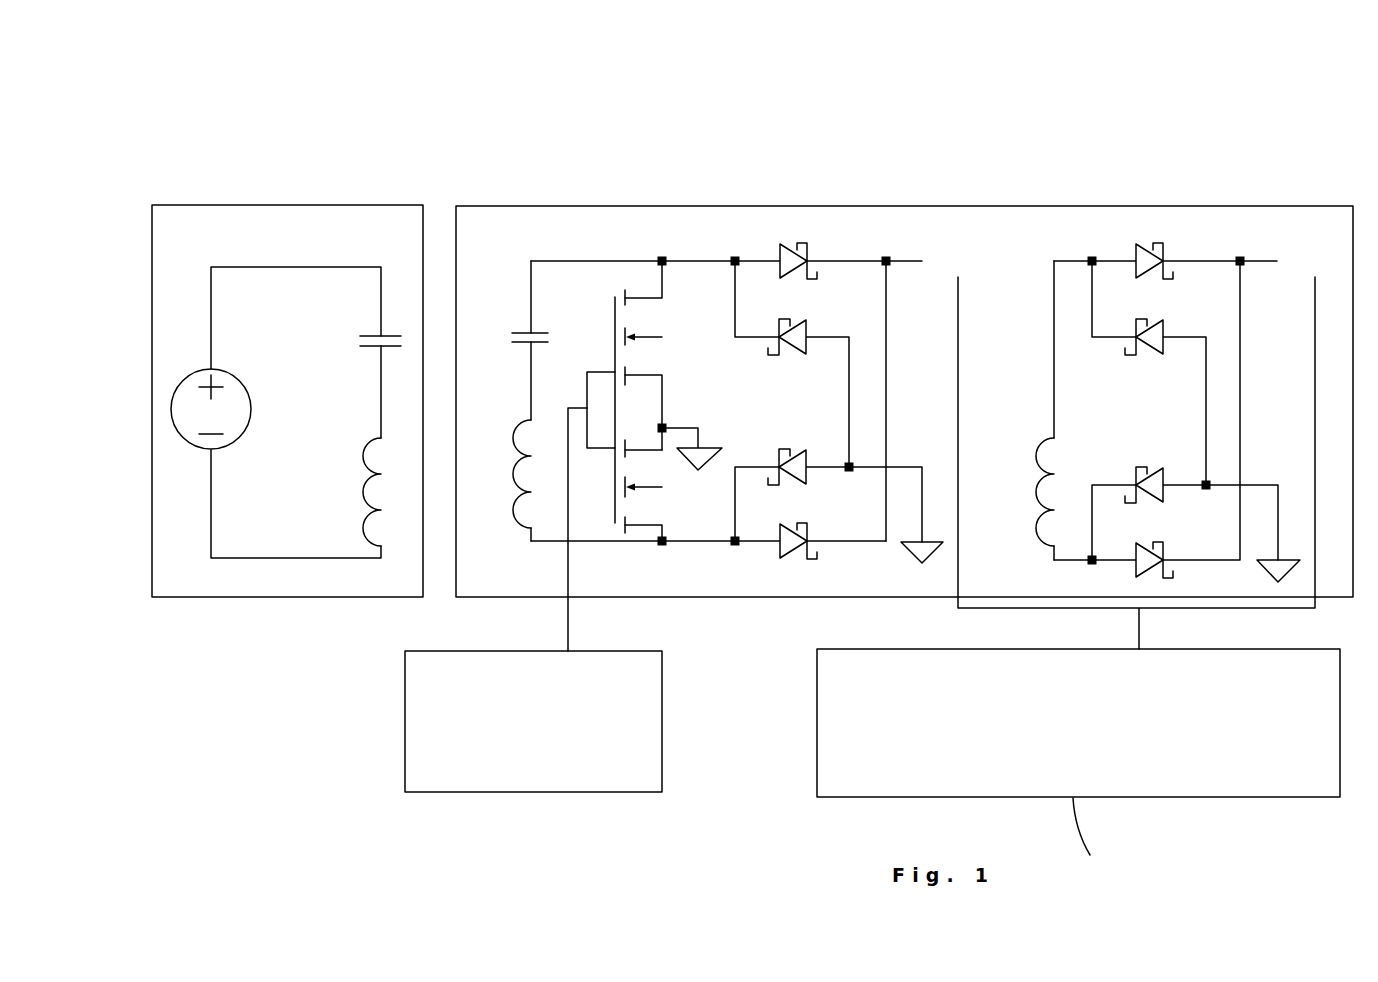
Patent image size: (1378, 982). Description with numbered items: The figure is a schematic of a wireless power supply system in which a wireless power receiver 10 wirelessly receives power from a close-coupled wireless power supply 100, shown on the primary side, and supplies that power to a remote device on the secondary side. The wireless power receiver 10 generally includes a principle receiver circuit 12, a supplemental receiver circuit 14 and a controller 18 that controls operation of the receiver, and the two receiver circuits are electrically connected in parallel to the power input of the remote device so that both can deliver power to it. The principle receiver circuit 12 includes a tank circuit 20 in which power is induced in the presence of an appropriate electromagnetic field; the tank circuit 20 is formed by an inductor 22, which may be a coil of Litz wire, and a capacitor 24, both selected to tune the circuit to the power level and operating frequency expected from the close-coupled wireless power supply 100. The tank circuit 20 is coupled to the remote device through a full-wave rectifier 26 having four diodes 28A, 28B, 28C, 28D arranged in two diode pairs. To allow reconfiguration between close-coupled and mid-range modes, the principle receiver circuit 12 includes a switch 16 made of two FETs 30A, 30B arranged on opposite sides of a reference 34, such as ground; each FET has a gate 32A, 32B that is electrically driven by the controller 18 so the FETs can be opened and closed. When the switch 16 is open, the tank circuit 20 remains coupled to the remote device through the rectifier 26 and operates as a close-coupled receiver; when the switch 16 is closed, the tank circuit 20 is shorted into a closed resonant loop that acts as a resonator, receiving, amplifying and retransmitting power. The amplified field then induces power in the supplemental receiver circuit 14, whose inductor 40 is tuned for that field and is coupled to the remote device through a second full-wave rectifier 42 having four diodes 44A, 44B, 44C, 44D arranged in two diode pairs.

The wireless power receiver 10 is at (934, 85).
The principle receiver circuit 12 is at (593, 224).
The supplemental receiver circuit 14 is at (1198, 228).
The switch 16 is at (576, 321).
The controller 18 is at (553, 795).
The tank circuit 20 is at (488, 557).
The inductor 22 is at (515, 433).
The capacitor 24 is at (508, 337).
The full-wave rectifier 26 is at (831, 228).
The diode 28A is at (782, 254).
The diode 28B is at (800, 353).
The diode 28C is at (804, 458).
The diode 28D is at (782, 557).
The FET 30A is at (610, 312).
The FET 30B is at (610, 495).
The gate 32A is at (613, 350).
The gate 32B is at (614, 462).
The reference 34 is at (706, 447).
The inductor 40 is at (1040, 440).
The full-wave rectifier 42 is at (1100, 222).
The diode 44A is at (1165, 252).
The diode 44B is at (1163, 351).
The diode 44C is at (1163, 478).
The diode 44D is at (1135, 565).
The close-coupled wireless power supply 100 is at (322, 612).